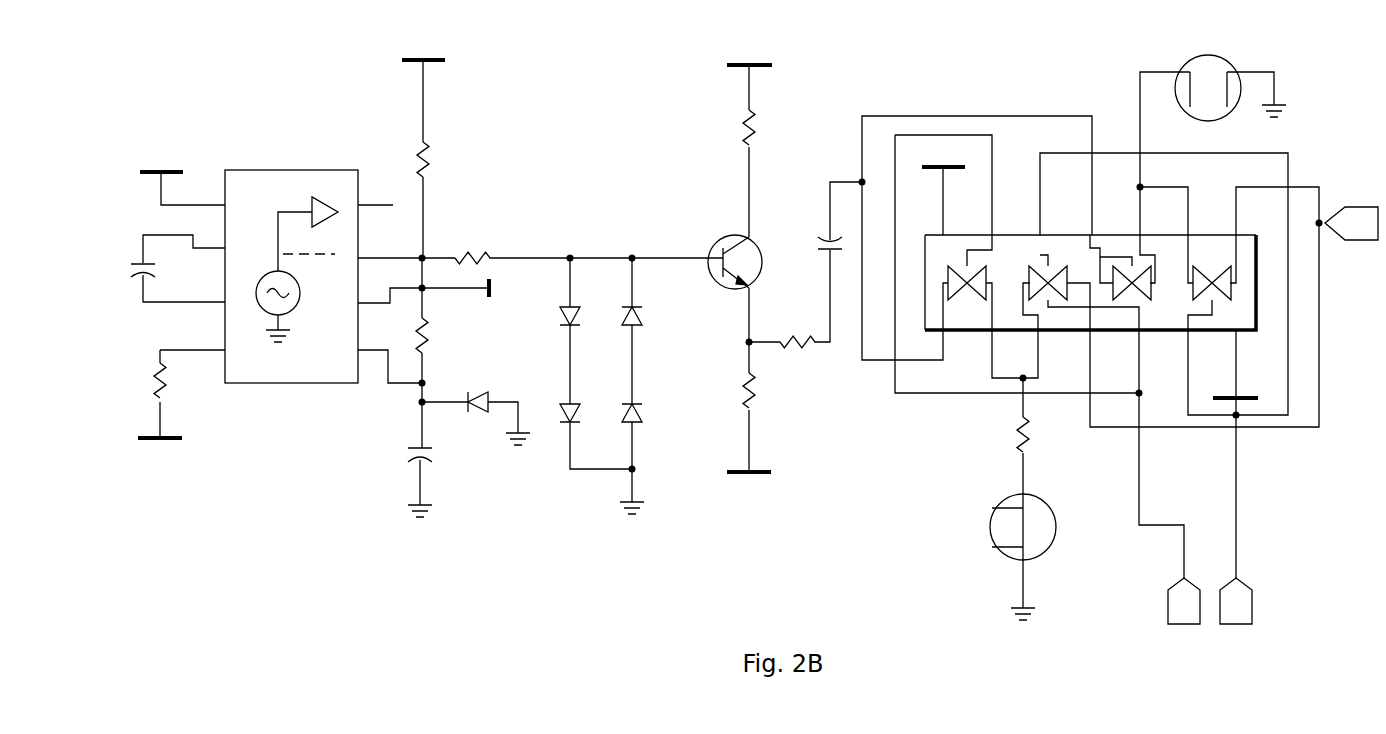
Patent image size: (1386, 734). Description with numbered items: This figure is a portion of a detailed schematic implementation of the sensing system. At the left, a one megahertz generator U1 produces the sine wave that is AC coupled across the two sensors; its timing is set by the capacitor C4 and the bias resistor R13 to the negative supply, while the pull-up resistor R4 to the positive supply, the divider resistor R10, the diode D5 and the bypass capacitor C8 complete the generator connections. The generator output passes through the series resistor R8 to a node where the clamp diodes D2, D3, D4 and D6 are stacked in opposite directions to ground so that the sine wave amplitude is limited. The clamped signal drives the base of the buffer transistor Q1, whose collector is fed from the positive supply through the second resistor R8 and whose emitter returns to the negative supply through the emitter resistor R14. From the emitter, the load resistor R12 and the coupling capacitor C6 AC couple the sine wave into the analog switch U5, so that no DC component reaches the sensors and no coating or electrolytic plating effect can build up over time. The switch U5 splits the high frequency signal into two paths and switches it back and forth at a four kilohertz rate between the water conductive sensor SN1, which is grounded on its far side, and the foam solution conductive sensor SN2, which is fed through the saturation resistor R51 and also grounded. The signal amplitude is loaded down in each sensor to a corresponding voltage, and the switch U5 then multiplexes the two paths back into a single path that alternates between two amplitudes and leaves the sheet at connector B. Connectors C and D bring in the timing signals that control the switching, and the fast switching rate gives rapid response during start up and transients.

The one megahertz generator U1 is at (333, 263).
The timing capacitor C4 is at (157, 268).
The bias resistor R13 is at (146, 407).
The pull-up resistor R4 is at (438, 147).
The series resistor R8 is at (612, 149).
The divider resistor R10 is at (441, 353).
The diode D5 is at (476, 408).
The bypass capacitor C8 is at (401, 473).
The clamp diode D2 is at (545, 331).
The clamp diode D3 is at (659, 331).
The clamp diode D4 is at (568, 450).
The clamp diode D6 is at (659, 459).
The buffer transistor Q1 is at (711, 271).
The emitter resistor R14 is at (738, 421).
The load resistor R12 is at (789, 324).
The coupling capacitor C6 is at (818, 222).
The analog switch U5 is at (1090, 325).
The water conductive sensor SN1 is at (1210, 64).
The saturation resistor R51 is at (1004, 443).
The foam solution conductive sensor SN2 is at (908, 557).
The connector B is at (1351, 223).
The connector C is at (1184, 601).
The connector D is at (1236, 601).